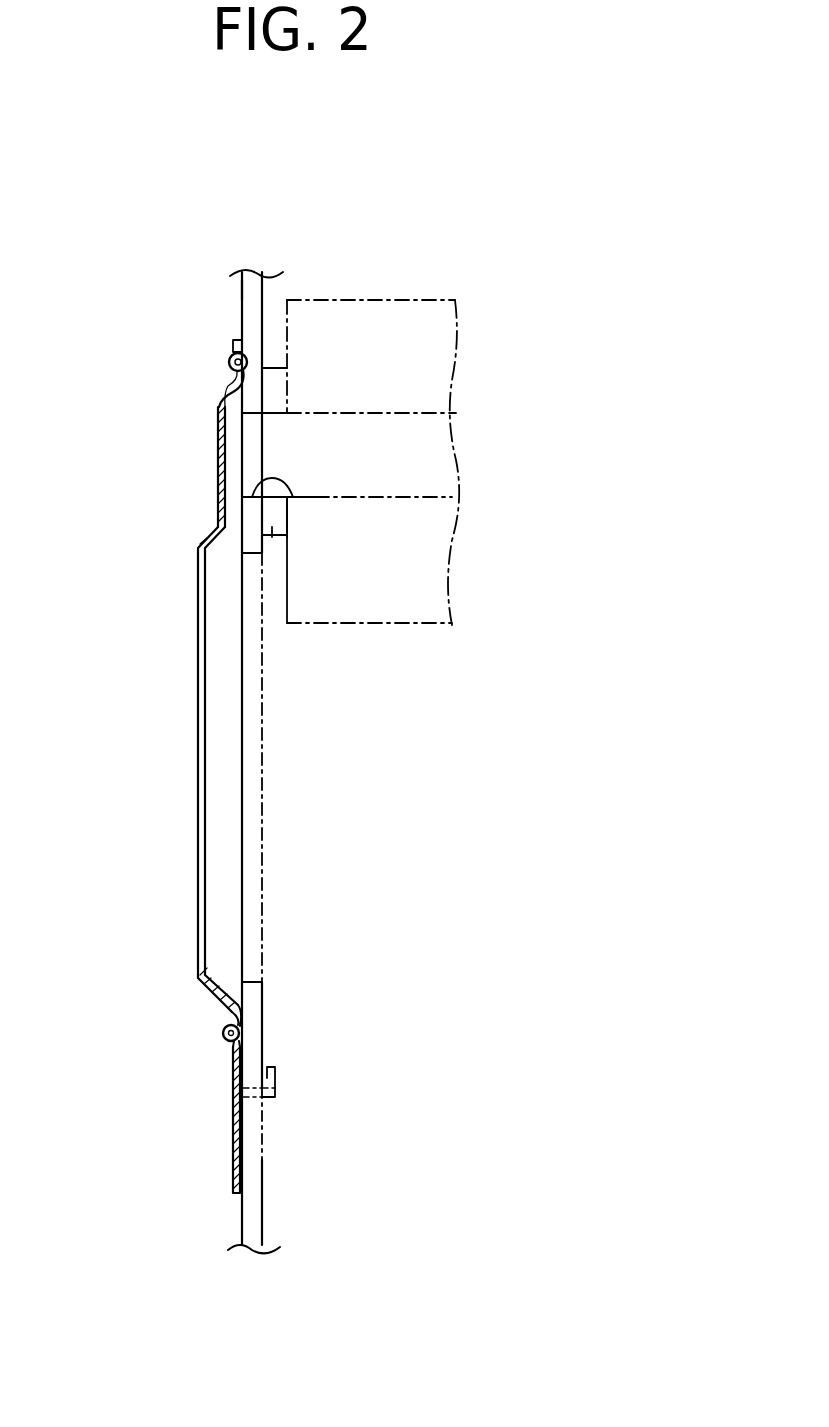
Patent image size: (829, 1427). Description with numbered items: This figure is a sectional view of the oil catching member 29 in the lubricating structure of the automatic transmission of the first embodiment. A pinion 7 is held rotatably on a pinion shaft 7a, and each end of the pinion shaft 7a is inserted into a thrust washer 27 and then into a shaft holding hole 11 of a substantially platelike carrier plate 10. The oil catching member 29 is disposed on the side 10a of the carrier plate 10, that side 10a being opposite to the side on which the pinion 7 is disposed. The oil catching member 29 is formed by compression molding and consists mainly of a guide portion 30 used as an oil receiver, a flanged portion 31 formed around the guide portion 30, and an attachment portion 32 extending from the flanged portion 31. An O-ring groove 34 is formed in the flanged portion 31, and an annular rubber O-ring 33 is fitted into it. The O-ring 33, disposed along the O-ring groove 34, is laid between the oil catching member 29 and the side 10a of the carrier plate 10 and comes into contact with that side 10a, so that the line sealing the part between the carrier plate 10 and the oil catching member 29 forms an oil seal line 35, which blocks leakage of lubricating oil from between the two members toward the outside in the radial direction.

The pinion 7 is at (395, 300).
The pinion shaft 7a is at (380, 497).
The carrier plate 10 is at (251, 297).
The side of the carrier plate 10a is at (241, 287).
The shaft holding hole 11 is at (293, 497).
The thrust washer 27 is at (272, 537).
The oil catching member 29 is at (214, 398).
The guide portion 30 is at (195, 533).
The flanged portion 31 is at (218, 440).
The attachment portion 32 is at (278, 1075).
The O-ring 33 is at (247, 370).
The O-ring groove 34 is at (240, 353).
The oil seal line 35 is at (247, 350).